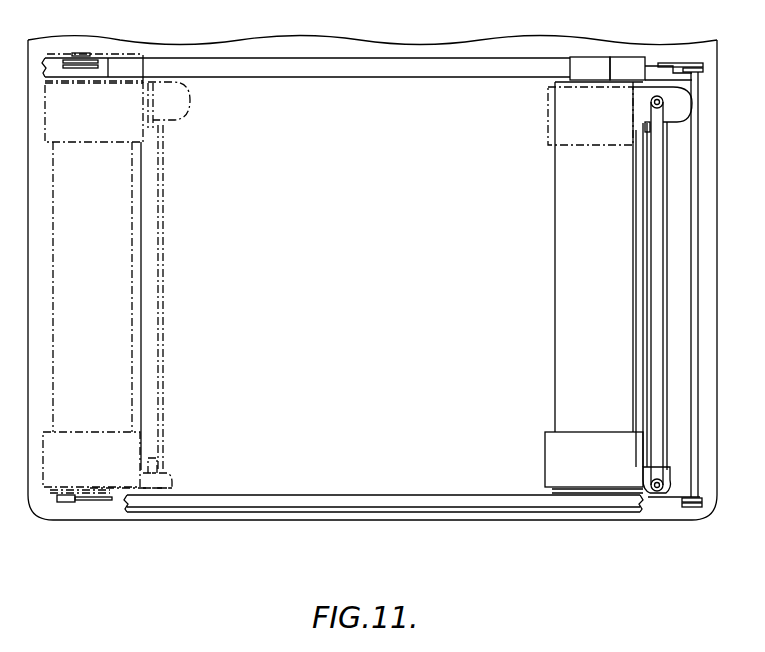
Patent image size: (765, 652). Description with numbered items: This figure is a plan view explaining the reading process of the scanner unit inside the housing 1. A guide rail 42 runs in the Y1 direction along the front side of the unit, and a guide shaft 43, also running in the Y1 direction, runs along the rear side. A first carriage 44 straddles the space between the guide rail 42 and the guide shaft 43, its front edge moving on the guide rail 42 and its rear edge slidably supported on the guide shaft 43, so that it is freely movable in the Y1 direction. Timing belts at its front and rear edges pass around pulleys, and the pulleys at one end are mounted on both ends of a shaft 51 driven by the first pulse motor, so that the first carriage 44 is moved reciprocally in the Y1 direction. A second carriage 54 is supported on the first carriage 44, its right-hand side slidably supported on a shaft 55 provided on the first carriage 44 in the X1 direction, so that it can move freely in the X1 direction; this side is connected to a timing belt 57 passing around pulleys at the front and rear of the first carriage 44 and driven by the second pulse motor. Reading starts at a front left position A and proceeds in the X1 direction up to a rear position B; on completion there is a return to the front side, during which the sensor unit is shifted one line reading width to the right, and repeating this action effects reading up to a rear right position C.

The frame 1 is at (697, 524).
The guide rail 42 is at (358, 503).
The guide shaft 43 is at (383, 70).
The first carriage 44 is at (562, 413).
The shaft 51 is at (693, 195).
The second carriage 54 is at (152, 121).
The shaft 55 is at (635, 387).
The timing belt 57 is at (663, 173).
The front left position A is at (118, 477).
The rear position B is at (150, 128).
The rear right position C is at (548, 100).
The X1 direction X1 is at (528, 200).
The Y1 direction Y1 is at (415, 279).